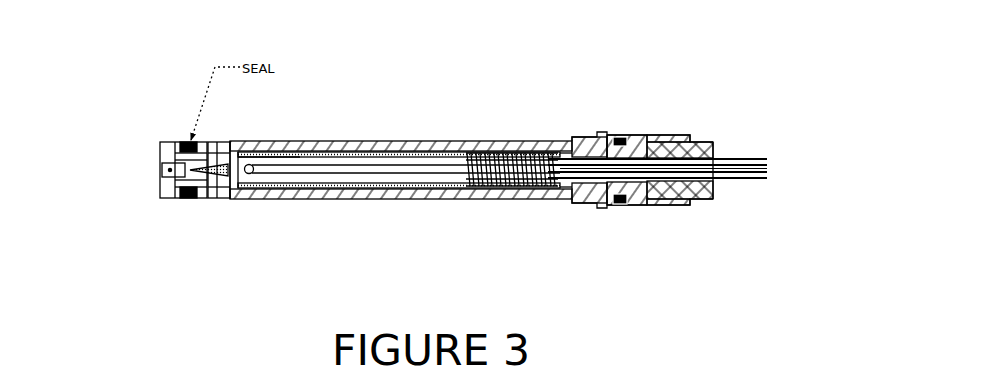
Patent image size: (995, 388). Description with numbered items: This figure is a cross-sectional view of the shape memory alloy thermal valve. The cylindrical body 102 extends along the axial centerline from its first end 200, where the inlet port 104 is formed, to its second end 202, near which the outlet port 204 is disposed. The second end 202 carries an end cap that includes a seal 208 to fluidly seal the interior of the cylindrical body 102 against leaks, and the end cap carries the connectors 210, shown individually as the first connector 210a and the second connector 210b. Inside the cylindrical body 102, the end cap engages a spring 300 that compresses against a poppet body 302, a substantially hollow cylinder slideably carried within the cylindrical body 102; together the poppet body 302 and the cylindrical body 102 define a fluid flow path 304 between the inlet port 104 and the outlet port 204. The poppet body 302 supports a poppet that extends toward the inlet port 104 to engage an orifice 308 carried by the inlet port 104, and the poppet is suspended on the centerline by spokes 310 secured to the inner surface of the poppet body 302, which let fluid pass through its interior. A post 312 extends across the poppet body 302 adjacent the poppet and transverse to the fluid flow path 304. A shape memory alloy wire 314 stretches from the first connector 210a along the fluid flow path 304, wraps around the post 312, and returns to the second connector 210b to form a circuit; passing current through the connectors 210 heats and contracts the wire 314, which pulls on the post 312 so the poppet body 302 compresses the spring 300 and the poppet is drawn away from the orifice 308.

The cylindrical body 102 is at (401, 127).
The inlet port 104 is at (115, 176).
The first end 200 is at (166, 140).
The second end 202 is at (647, 207).
The outlet port 204 is at (651, 208).
The seal 208 is at (588, 196).
The connectors 210 is at (663, 89).
The first connector 210a is at (742, 159).
The second connector 210b is at (750, 180).
The spring 300 is at (561, 121).
The poppet body 302 is at (399, 138).
The fluid flow path 304 is at (358, 171).
The orifice 308 is at (175, 221).
The spokes 310 is at (229, 176).
The post 312 is at (255, 172).
The shape memory alloy wire 314 is at (307, 85).